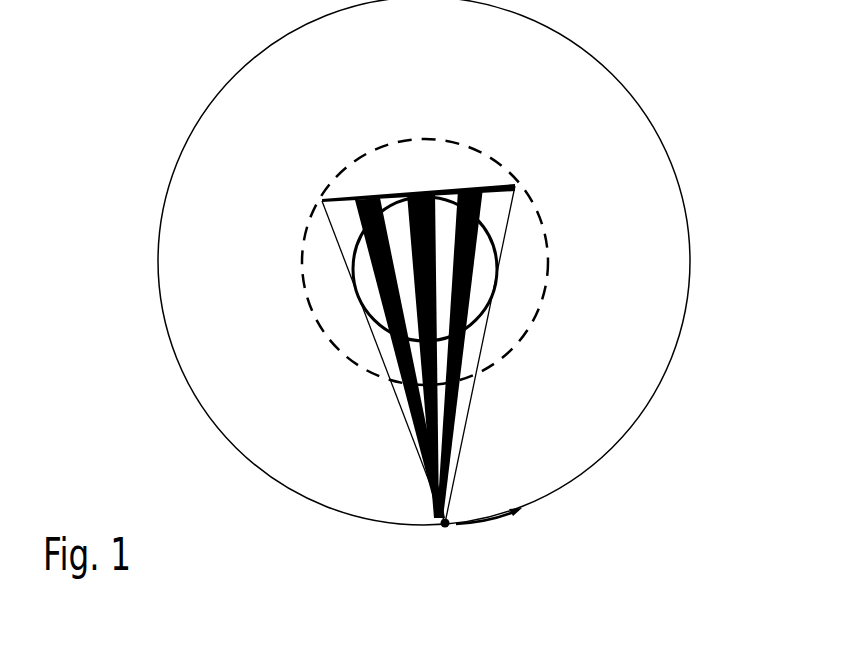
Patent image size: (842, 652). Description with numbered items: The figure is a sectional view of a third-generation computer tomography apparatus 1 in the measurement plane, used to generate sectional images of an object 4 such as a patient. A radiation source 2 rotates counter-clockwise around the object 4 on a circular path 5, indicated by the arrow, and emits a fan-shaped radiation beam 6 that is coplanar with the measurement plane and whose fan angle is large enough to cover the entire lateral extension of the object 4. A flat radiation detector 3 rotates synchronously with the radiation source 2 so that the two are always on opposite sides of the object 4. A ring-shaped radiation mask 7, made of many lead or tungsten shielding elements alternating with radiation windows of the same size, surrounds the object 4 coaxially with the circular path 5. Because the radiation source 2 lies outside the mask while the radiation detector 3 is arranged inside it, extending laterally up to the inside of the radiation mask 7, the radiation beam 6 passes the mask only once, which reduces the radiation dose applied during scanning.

The computer tomography apparatus 1 is at (437, 292).
The radiation source 2 is at (487, 546).
The radiation detector 3 is at (322, 199).
The object 4 is at (489, 236).
The circular path 5 is at (423, 262).
The fan-shaped radiation beam 6 is at (460, 407).
The ring-shaped radiation mask 7 is at (407, 262).